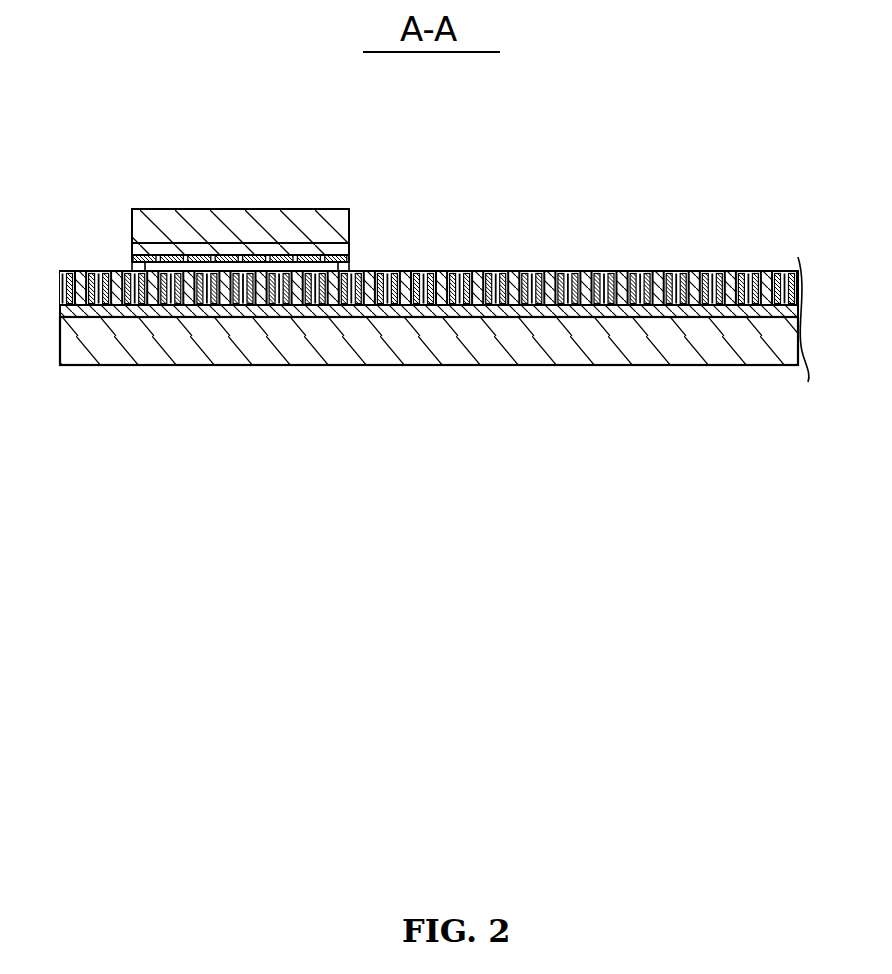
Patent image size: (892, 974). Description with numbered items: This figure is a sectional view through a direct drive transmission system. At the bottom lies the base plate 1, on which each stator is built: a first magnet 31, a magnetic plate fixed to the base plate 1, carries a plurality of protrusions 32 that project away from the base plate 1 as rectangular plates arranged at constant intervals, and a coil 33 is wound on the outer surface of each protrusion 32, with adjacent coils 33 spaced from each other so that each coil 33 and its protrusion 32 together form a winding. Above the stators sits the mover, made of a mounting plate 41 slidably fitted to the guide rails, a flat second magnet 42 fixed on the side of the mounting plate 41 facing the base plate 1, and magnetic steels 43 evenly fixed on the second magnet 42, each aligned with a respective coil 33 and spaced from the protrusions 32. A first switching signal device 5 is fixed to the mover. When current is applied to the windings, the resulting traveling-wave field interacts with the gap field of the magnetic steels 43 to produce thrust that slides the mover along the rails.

The base plate 1 is at (105, 366).
The first magnet 31 is at (178, 312).
The protrusions 32 is at (334, 280).
The coils 33 is at (241, 290).
The mounting plate 41 is at (283, 218).
The second magnet 42 is at (205, 250).
The magnetic steels 43 is at (140, 262).
The first switching signal device 5 is at (240, 192).